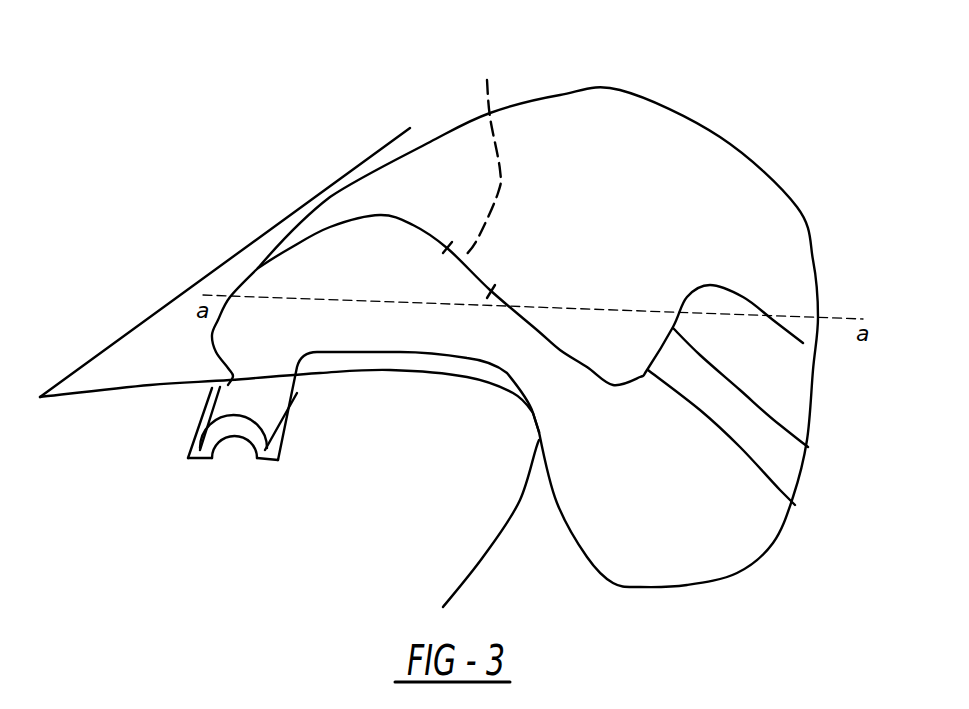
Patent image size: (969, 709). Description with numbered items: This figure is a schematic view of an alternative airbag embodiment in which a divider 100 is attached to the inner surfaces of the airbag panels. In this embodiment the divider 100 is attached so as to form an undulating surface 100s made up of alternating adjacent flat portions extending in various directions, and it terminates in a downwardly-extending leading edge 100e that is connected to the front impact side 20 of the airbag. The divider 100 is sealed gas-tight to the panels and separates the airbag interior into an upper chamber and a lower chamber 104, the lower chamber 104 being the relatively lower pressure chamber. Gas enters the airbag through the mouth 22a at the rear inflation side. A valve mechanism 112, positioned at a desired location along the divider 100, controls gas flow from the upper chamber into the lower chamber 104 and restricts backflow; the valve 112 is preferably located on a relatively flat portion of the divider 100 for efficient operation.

The front impact side 20 is at (800, 207).
The mouth 22a is at (260, 370).
The divider 100 is at (808, 447).
The leading edge 100e is at (803, 343).
The undulating surface 100s is at (795, 505).
The lower chamber 104 is at (694, 491).
The valve mechanism 112 is at (475, 172).